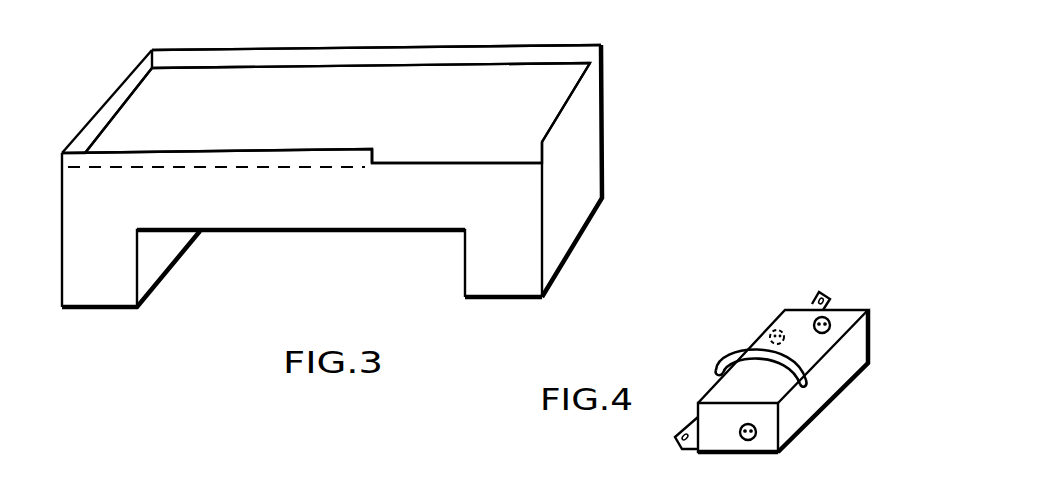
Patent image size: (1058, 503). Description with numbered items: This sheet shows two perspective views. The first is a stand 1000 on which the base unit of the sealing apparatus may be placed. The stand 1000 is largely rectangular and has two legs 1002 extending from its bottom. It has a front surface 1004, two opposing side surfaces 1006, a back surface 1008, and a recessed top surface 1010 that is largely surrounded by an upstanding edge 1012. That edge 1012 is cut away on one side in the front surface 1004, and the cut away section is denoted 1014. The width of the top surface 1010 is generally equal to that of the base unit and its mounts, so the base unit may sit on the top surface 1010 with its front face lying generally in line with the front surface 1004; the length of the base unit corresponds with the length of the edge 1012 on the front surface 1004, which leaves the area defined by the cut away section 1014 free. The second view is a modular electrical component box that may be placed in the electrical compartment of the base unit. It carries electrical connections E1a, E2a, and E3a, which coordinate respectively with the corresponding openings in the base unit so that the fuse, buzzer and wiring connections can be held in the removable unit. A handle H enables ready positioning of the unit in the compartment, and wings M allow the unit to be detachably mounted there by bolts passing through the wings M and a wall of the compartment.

In FIG. 3, the stand 1000 is at (614, 154).
In FIG. 3, the legs 1002 is at (163, 273).
In FIG. 3, the front surface 1004 is at (302, 228).
In FIG. 3, the side surfaces 1006 is at (79, 126).
In FIG. 3, the back surface 1008 is at (460, 46).
In FIG. 3, the recessed top surface 1010 is at (326, 113).
In FIG. 3, the upstanding edge 1012 is at (281, 62).
In FIG. 3, the cut away section 1014 is at (406, 174).
In FIG. 4, the connection E3a is at (781, 331).
In FIG. 4, the connection E1a is at (828, 319).
In FIG. 4, the connection E2a is at (748, 441).
In FIG. 4, the handle H is at (820, 383).
In FIG. 4, the wings M is at (675, 438).